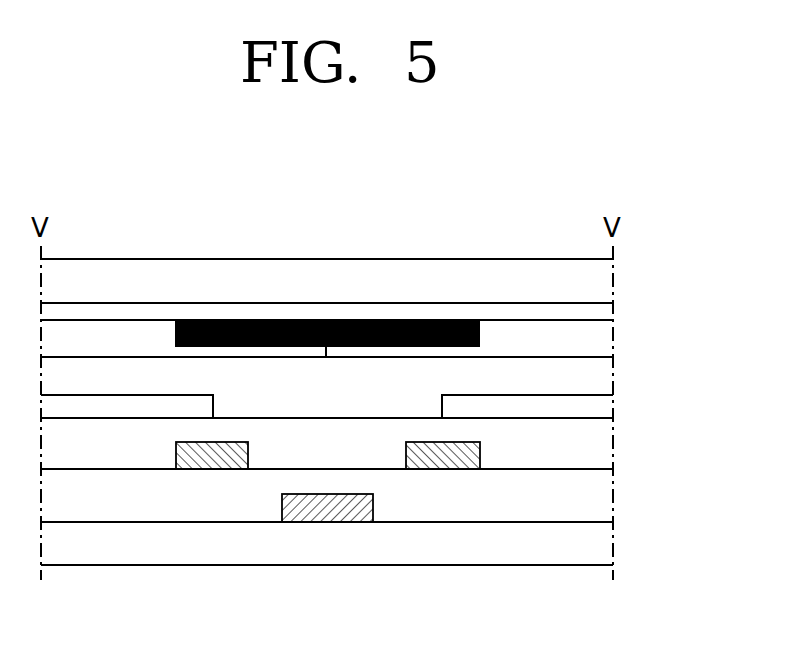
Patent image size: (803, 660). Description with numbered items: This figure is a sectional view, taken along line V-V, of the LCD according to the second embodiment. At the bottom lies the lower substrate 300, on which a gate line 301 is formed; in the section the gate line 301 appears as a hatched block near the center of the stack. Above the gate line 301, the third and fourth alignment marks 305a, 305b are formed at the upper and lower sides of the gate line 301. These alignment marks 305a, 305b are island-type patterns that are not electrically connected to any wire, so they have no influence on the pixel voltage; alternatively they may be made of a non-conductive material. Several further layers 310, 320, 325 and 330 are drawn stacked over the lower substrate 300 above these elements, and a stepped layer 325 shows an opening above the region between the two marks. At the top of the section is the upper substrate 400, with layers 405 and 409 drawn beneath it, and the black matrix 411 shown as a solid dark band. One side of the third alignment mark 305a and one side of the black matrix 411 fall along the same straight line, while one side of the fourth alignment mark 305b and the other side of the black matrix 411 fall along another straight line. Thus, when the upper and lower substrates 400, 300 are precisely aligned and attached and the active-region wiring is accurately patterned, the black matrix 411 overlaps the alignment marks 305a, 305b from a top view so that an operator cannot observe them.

The lower substrate 300 is at (603, 545).
The gate line 301 is at (327, 515).
The third alignment mark 305a is at (208, 462).
The fourth alignment mark 305b is at (456, 465).
The gate insulating layer 310 is at (603, 490).
The passivation layer 320 is at (603, 445).
The pixel electrode 325 is at (603, 405).
The alignment layer 330 is at (603, 376).
The upper substrate 400 is at (603, 273).
The color filter layer 405 is at (603, 310).
The common electrode 409 is at (603, 340).
The black matrix 411 is at (370, 320).